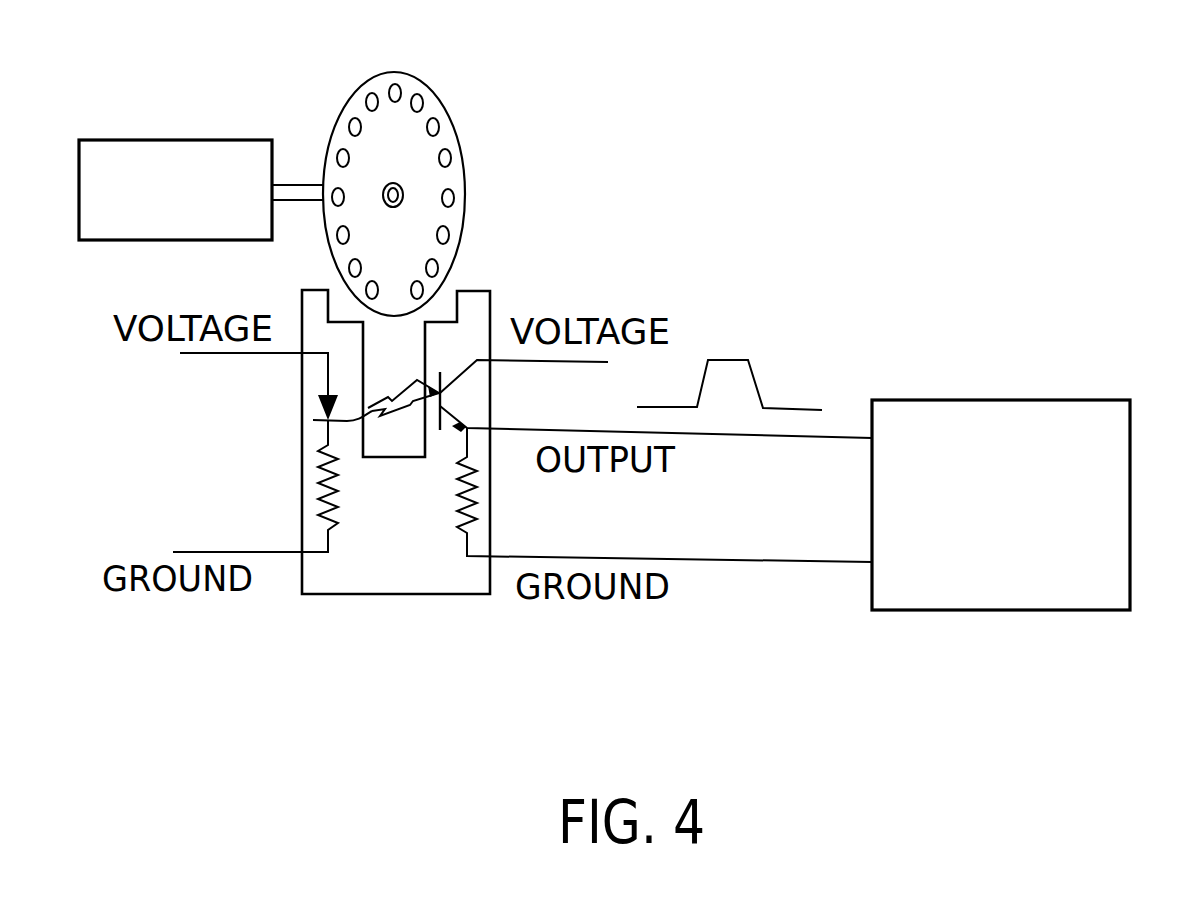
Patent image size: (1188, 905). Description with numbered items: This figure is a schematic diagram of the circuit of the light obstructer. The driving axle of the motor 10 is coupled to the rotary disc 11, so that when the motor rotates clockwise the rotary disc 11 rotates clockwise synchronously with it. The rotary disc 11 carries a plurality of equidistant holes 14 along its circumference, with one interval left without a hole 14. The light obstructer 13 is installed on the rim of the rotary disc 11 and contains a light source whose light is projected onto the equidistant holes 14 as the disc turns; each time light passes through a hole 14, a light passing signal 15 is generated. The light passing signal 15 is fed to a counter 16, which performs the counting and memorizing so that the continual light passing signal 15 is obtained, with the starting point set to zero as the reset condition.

The motor 10 is at (97, 147).
The rotary disc 11 is at (432, 104).
The hole 14 is at (454, 197).
The light obstructer 13 is at (313, 585).
The light passing signal 15 is at (737, 360).
The counter 16 is at (1110, 592).